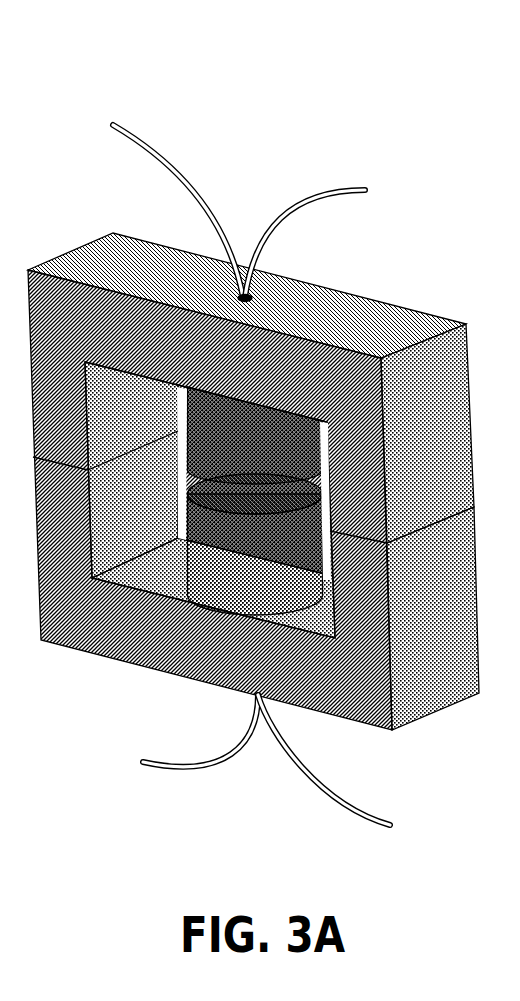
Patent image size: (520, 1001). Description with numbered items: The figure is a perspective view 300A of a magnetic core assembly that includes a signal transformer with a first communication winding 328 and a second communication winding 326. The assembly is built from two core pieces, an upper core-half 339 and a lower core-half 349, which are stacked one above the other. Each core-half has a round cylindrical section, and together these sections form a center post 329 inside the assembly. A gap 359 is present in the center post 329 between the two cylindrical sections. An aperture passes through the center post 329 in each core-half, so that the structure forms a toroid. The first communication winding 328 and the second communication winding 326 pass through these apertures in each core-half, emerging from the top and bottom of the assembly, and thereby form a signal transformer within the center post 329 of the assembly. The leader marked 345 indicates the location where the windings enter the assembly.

The perspective view 300A is at (253, 440).
The upper core-half 339 is at (453, 443).
The lower core-half 349 is at (453, 601).
The center post 329 is at (268, 459).
The wire exit opening 345 is at (247, 293).
The first communication winding 328 is at (127, 143).
The second communication winding 326 is at (352, 182).
The gap 359 is at (230, 500).